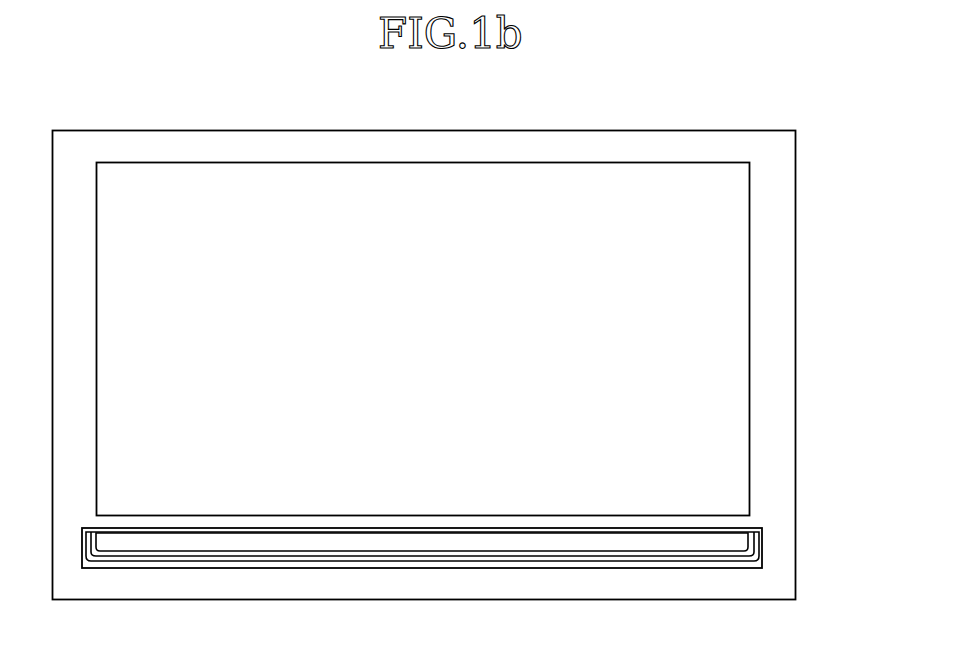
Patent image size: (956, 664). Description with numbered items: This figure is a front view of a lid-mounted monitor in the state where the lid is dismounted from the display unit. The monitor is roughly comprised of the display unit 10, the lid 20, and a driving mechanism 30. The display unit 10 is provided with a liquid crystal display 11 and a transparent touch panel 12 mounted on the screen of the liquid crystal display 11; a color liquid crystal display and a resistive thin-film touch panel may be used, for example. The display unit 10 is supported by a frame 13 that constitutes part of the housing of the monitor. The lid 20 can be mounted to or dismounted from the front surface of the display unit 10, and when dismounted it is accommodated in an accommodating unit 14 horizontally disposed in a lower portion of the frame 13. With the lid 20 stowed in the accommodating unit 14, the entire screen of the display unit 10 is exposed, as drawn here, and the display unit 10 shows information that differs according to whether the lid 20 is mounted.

The display unit 10 is at (724, 275).
The liquid crystal display 11 is at (423, 296).
The touch panel 12 is at (583, 196).
The frame 13 is at (686, 143).
The accommodating unit 14 is at (404, 567).
The lid 20 is at (668, 543).
The driving mechanism 30 is at (765, 543).